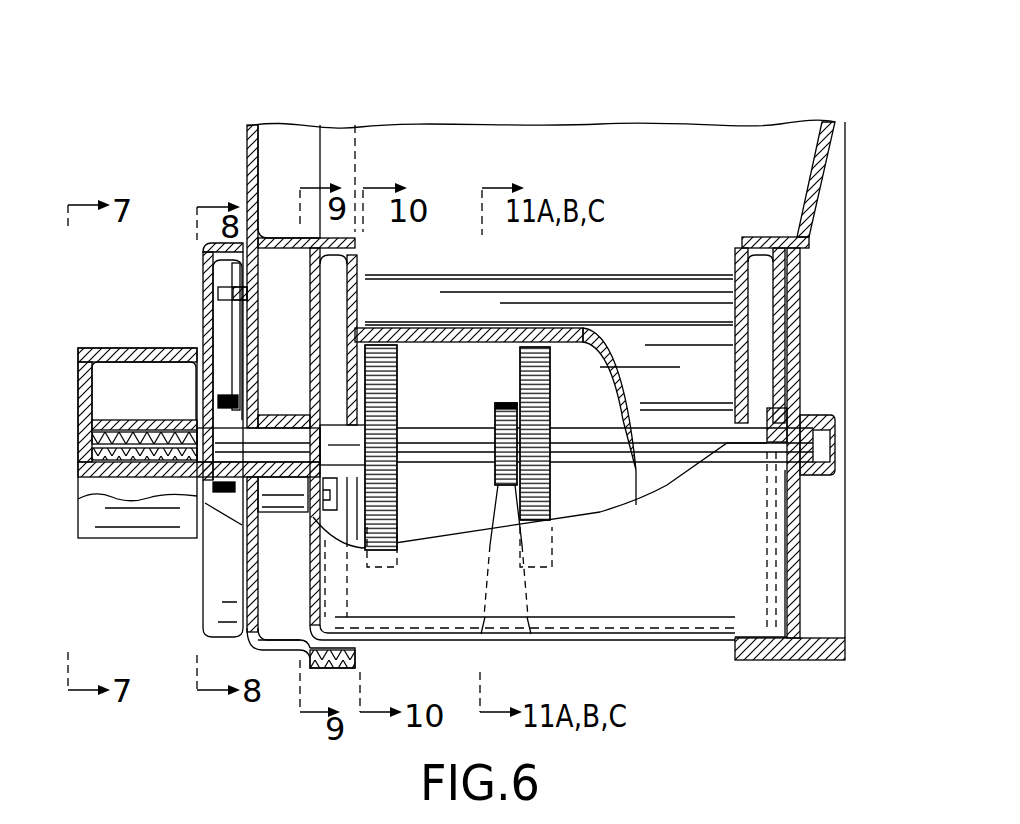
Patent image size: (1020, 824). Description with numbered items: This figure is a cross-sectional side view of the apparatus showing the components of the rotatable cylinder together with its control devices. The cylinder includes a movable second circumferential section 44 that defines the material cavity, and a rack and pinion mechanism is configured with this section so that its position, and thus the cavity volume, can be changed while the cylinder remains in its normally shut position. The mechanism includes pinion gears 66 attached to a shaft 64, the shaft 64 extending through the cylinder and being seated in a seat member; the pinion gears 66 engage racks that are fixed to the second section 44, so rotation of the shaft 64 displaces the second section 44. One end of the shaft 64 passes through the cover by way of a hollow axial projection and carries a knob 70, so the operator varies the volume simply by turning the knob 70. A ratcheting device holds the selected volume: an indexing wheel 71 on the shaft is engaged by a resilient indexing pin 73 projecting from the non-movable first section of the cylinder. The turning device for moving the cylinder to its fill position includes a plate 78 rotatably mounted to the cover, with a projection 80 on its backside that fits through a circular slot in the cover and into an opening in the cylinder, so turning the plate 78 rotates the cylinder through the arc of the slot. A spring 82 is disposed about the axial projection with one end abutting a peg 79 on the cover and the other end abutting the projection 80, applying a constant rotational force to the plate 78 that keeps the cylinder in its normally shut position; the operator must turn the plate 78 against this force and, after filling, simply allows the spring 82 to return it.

The second circumferential section 44 is at (652, 340).
The shaft 64 is at (432, 435).
The pinion gear 66 is at (543, 417).
The knob 70 is at (128, 349).
The indexing wheel 71 is at (500, 380).
The resilient indexing pin 73 is at (503, 520).
The plate 78 is at (205, 276).
The peg 79 is at (228, 330).
The projection 80 is at (281, 508).
The spring 82 is at (238, 402).